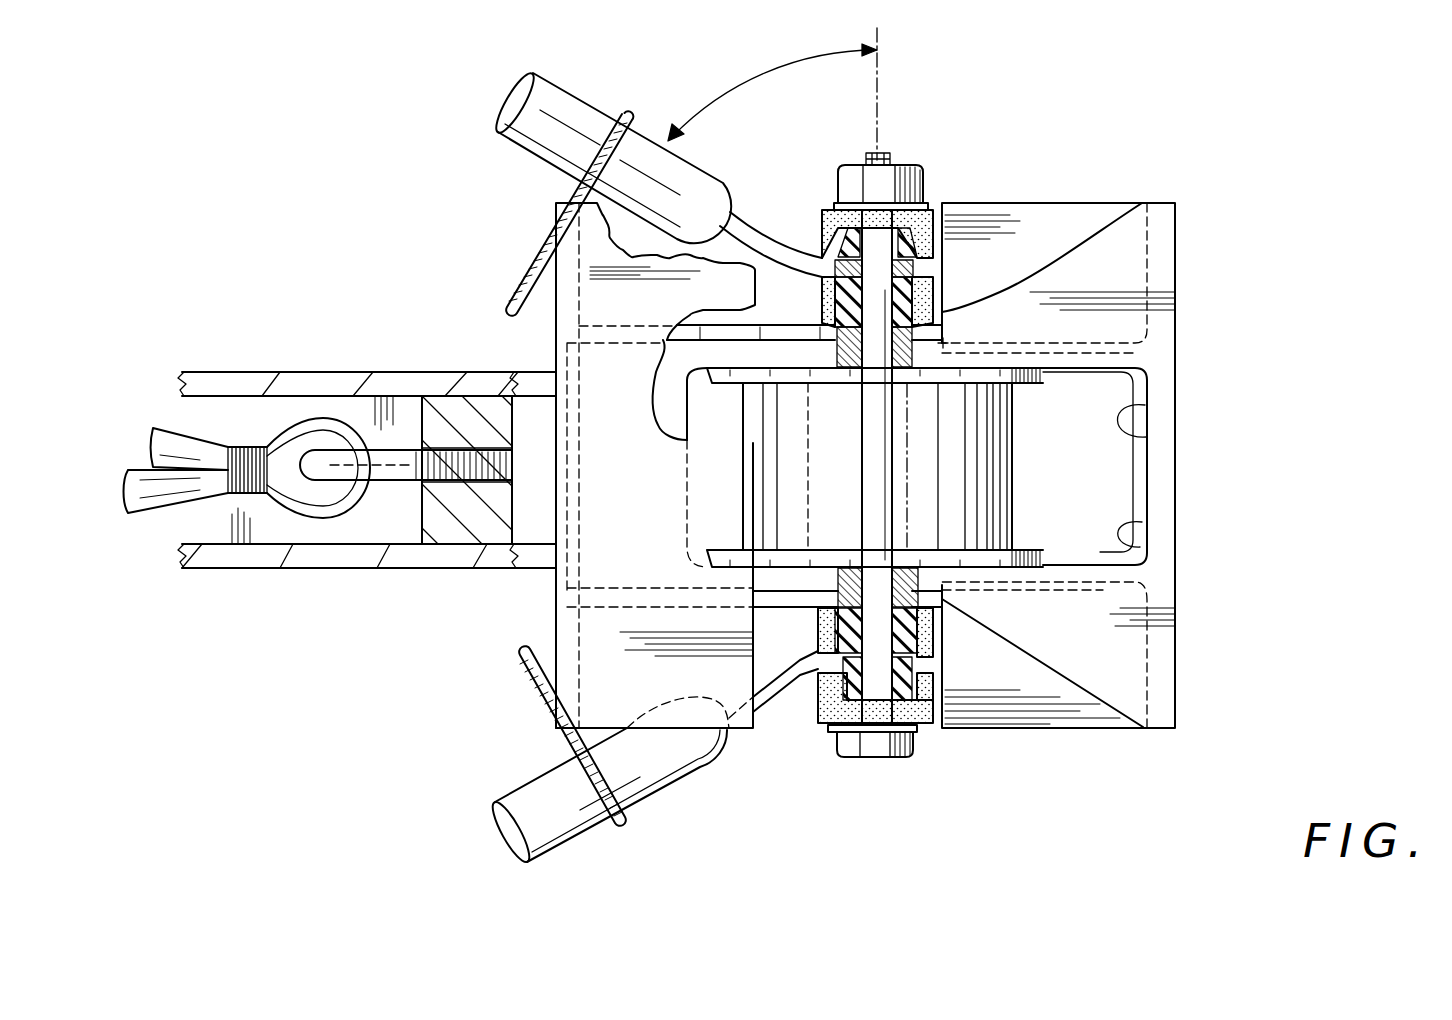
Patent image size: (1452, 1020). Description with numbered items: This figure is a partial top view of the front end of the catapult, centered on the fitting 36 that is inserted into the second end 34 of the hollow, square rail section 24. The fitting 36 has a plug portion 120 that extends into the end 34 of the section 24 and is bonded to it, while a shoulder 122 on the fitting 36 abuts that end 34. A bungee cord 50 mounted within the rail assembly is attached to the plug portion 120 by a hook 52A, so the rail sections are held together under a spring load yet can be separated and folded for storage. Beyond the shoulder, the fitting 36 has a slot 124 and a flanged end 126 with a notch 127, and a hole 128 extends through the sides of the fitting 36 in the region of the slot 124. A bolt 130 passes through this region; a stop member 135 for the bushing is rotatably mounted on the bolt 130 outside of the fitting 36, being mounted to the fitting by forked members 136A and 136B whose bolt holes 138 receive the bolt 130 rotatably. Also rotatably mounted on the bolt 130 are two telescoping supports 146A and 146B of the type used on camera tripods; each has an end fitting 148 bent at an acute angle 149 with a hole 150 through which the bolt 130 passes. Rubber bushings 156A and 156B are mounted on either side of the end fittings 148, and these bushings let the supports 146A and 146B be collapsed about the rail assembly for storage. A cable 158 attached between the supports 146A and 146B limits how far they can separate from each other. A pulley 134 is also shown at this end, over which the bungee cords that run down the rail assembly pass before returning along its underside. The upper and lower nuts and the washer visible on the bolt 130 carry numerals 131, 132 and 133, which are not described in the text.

The section 24 is at (242, 568).
The second end 34 is at (528, 568).
The fitting 36 is at (1178, 676).
The bungee cord 50 is at (170, 512).
The hook 52A is at (340, 420).
The plug portion 120 is at (425, 522).
The shoulder 122 is at (530, 358).
The slot 124 is at (1140, 547).
The flanged end 126 is at (1175, 322).
The notch 127 is at (1147, 436).
The hole 128 is at (893, 388).
The bolt 130 is at (895, 757).
The lower nut 131 is at (832, 727).
The upper nut 132 is at (905, 165).
The washer 133 is at (928, 207).
The pulley 134 is at (1013, 482).
The stop member 135 is at (556, 214).
The forked member 136A is at (770, 325).
The forked member 136B is at (789, 610).
The bolt holes 138 is at (892, 340).
The telescoping support 146A is at (497, 119).
The telescoping support 146B is at (500, 832).
The end fittings 148 is at (752, 236).
The acute angle 149 is at (743, 80).
The holes 150 is at (922, 240).
The rubber bushing 156A is at (892, 270).
The rubber bushing 156B is at (893, 388).
The cable 158 is at (522, 282).